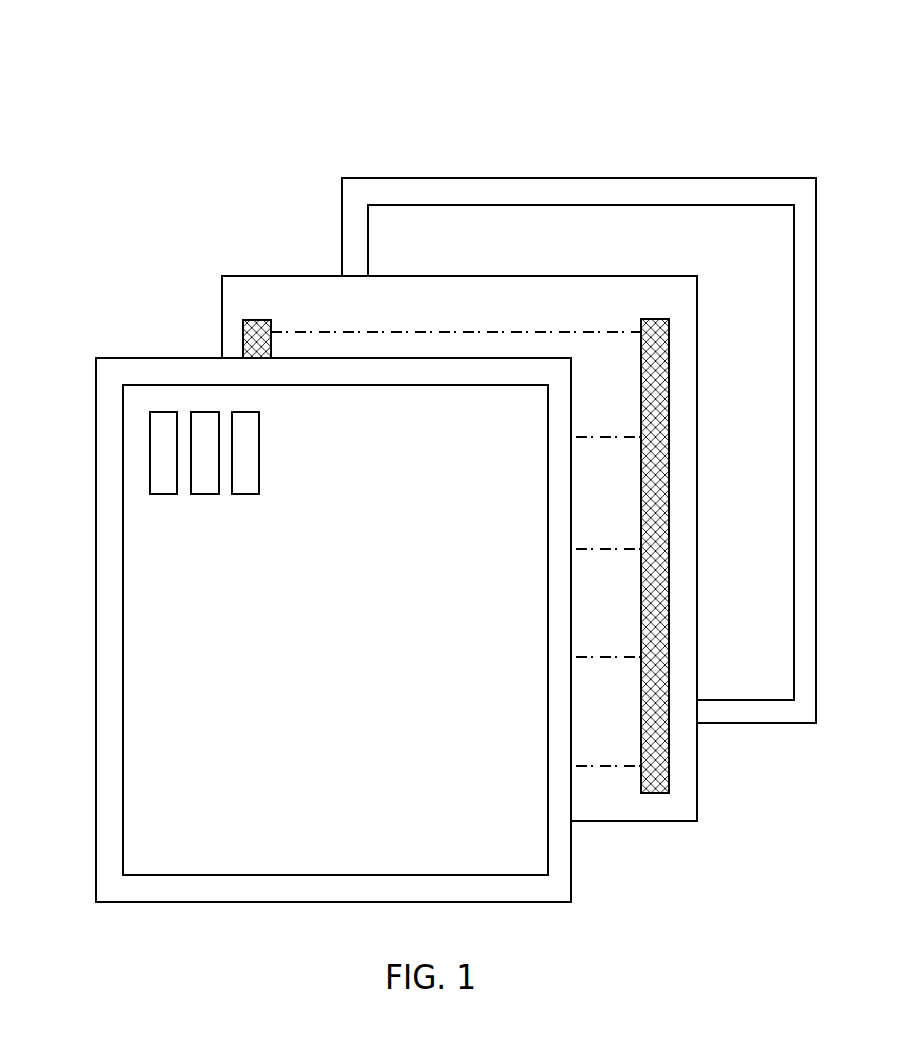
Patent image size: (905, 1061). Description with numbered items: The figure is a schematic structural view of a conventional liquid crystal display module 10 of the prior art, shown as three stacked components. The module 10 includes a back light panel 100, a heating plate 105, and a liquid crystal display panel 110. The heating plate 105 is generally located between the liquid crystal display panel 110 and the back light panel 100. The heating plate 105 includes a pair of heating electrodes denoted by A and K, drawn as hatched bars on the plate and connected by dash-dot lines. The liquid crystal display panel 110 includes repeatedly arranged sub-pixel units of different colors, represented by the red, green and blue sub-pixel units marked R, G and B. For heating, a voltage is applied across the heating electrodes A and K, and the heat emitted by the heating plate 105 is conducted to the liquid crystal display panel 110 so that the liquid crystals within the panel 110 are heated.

The liquid crystal display module 10 is at (749, 103).
The back light panel 100 is at (467, 222).
The heating plate 105 is at (313, 309).
The liquid crystal display panel 110 is at (135, 443).